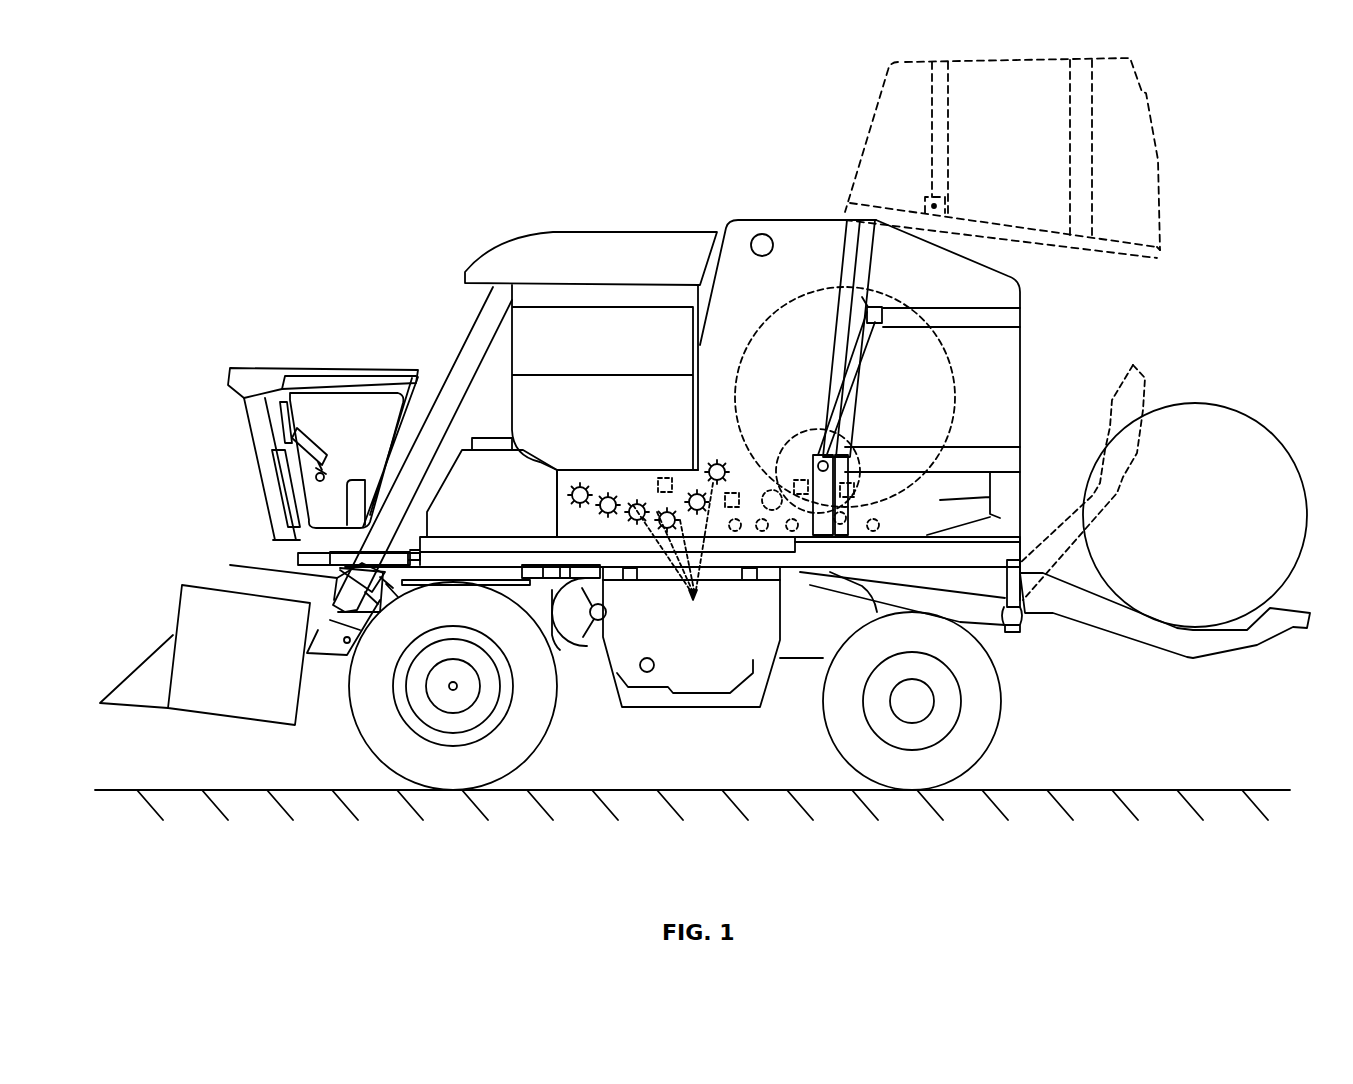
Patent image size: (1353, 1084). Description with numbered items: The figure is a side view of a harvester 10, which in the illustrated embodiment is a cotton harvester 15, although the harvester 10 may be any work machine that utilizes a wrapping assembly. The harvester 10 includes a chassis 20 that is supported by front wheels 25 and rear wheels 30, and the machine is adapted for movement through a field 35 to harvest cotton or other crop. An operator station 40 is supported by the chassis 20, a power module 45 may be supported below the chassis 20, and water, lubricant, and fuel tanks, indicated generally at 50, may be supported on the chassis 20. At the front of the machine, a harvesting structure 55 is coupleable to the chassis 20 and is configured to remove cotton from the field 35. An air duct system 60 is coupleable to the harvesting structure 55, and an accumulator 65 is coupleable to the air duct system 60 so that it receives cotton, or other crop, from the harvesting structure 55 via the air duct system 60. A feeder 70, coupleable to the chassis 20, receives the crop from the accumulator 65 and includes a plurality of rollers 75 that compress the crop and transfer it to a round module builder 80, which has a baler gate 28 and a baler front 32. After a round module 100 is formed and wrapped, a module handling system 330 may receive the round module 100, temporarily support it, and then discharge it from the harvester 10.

The harvester 10 is at (292, 118).
The cotton harvester 15 is at (366, 316).
The chassis 20 is at (478, 555).
The front wheels 25 is at (527, 723).
The baler gate 28 is at (1030, 261).
The rear wheels 30 is at (976, 724).
The baler front 32 is at (770, 308).
The field 35 is at (1152, 788).
The operator station 40 is at (303, 368).
The power module 45 is at (702, 657).
The water, lubricant, and fuel tanks 50 is at (500, 477).
The harvesting structure 55 is at (222, 700).
The air duct system 60 is at (485, 328).
The accumulator 65 is at (556, 330).
The feeder 70 is at (633, 480).
The rollers 75 is at (610, 493).
The round module builder 80 is at (787, 170).
The round module 100 is at (1213, 324).
The module handling system 330 is at (1068, 535).